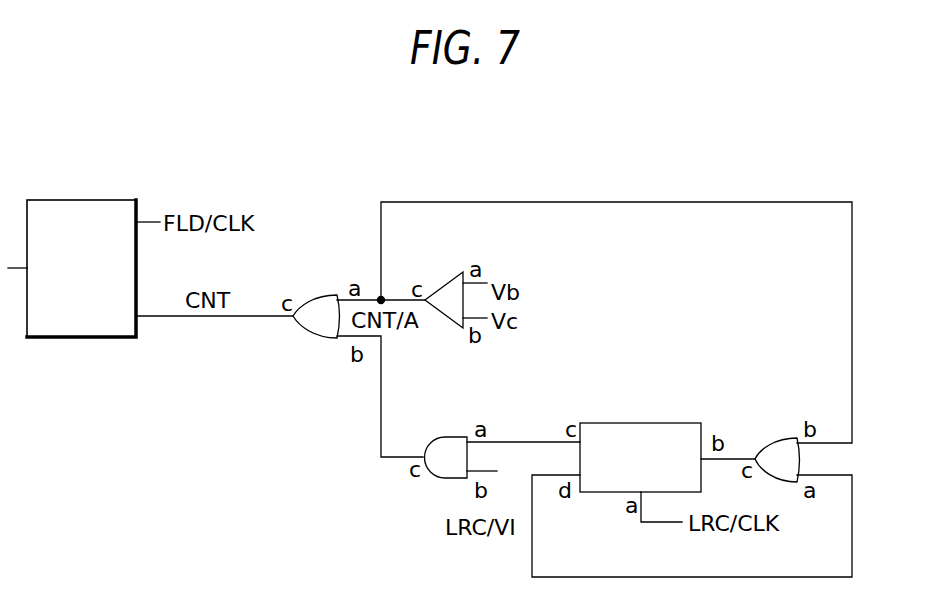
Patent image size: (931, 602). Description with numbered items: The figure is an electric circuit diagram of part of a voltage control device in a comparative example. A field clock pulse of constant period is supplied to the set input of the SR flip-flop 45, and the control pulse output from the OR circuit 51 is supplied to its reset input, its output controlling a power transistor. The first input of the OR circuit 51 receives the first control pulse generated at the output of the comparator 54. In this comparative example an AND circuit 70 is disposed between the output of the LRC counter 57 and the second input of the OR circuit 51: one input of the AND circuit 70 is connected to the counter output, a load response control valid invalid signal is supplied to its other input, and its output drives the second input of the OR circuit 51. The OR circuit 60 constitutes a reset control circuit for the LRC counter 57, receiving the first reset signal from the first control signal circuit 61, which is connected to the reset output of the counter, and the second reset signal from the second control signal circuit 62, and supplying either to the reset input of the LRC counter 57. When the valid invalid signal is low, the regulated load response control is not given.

The SR flip-flop 45 is at (79, 338).
The OR circuit 51 is at (325, 341).
The comparator 54 is at (446, 284).
The load response control counter (LRC counter) 57 is at (642, 422).
The OR circuit 60 is at (781, 437).
The first control signal circuit 61 is at (852, 523).
The second control signal circuit 62 is at (852, 325).
The AND circuit 70 is at (447, 436).